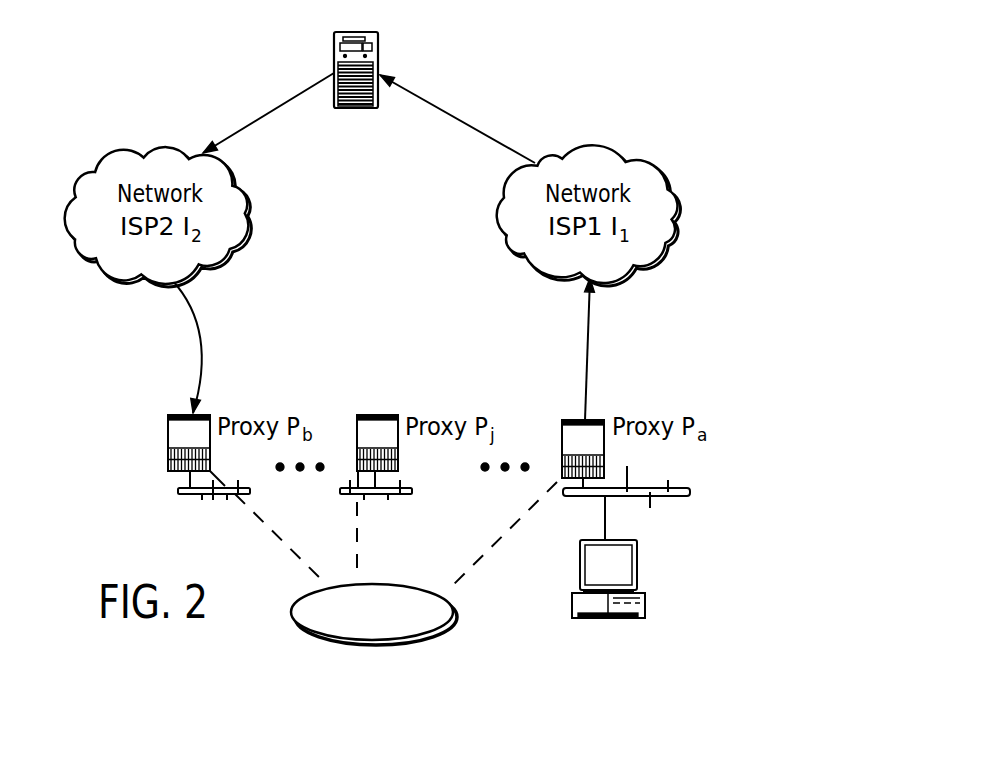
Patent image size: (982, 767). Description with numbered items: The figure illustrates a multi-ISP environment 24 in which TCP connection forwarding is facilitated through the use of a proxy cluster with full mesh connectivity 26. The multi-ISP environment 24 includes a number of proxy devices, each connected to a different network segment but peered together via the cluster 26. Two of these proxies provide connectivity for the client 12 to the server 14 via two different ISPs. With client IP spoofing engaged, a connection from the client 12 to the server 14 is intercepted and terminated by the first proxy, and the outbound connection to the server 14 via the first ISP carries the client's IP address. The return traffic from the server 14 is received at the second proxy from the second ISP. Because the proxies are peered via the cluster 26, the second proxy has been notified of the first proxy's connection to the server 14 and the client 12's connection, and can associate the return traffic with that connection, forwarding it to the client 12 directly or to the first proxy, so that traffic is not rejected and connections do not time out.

The multi-ISP environment 24 is at (519, 40).
The server 14 is at (355, 89).
The client 12 is at (612, 576).
The proxy cluster with full mesh connectivity 26 is at (427, 622).